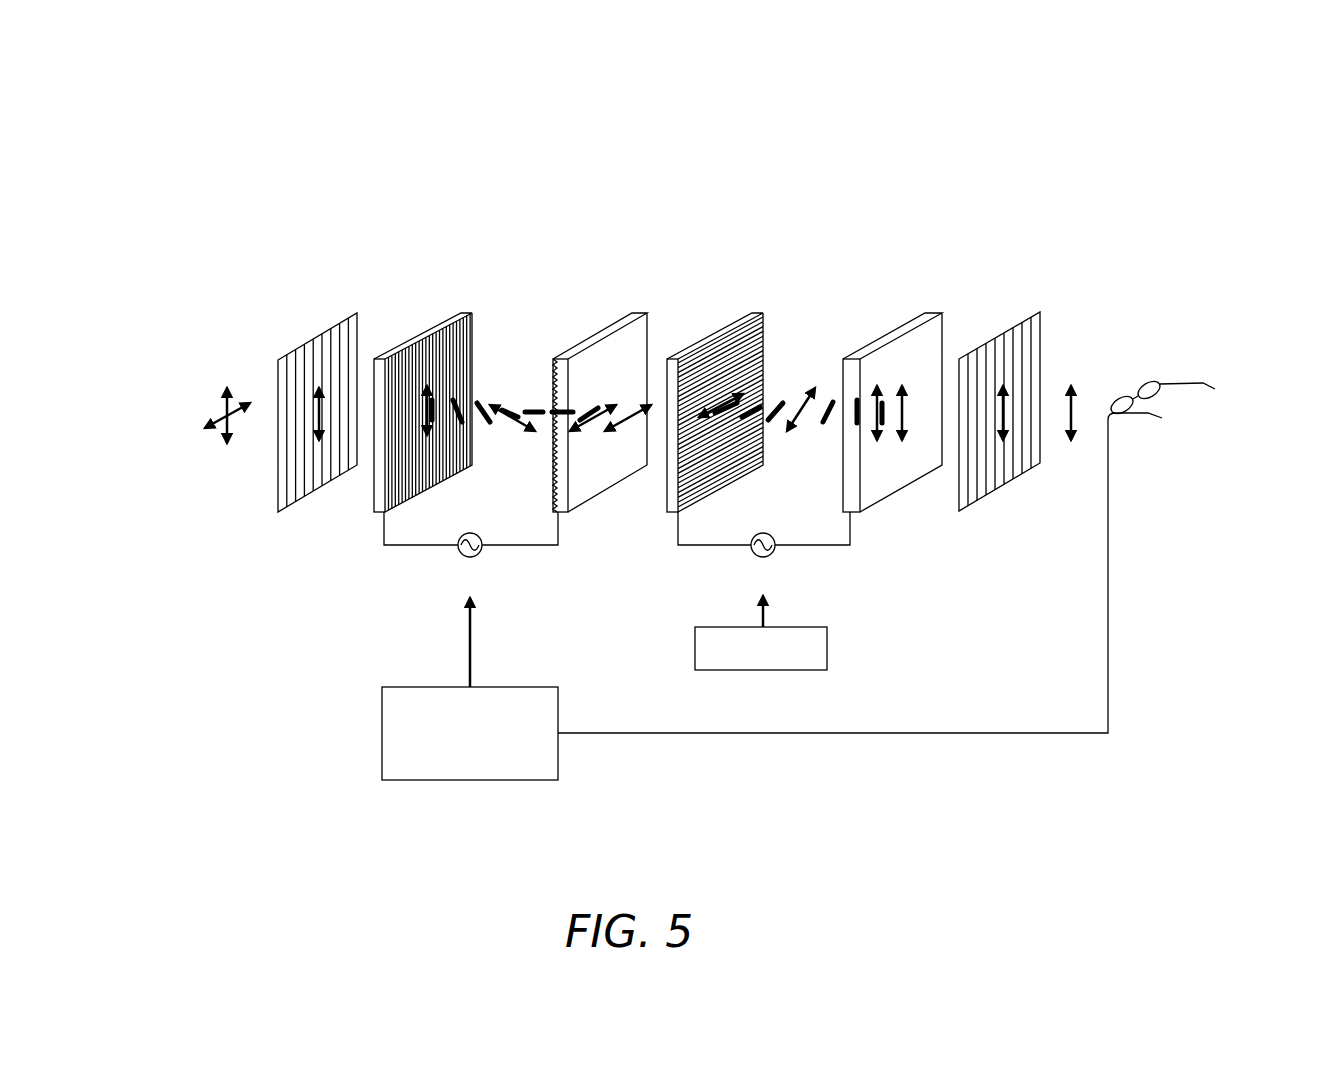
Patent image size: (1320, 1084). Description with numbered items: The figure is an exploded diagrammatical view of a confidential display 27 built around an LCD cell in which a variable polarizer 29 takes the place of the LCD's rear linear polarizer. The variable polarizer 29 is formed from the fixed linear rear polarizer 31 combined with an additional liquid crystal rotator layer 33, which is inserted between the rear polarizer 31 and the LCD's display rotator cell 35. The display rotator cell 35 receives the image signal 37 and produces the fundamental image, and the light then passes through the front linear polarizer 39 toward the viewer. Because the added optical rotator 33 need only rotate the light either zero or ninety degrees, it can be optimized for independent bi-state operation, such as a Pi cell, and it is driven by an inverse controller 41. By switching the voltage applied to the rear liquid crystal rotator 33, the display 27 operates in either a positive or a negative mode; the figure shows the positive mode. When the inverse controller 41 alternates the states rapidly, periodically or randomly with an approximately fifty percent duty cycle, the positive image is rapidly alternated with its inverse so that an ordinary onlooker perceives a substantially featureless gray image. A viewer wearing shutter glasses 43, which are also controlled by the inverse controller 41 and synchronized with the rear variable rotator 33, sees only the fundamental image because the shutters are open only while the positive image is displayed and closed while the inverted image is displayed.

The confidential display 27 is at (908, 216).
The variable polarizer 29 is at (658, 247).
The fixed linear rear polarizer 31 is at (303, 346).
The liquid crystal rotator layer 33 is at (652, 297).
The display rotator cell 35 is at (943, 297).
The image signal 37 is at (827, 657).
The front linear polarizer 39 is at (1040, 312).
The inverse controller 41 is at (558, 772).
The shutter glasses 43 is at (1170, 380).